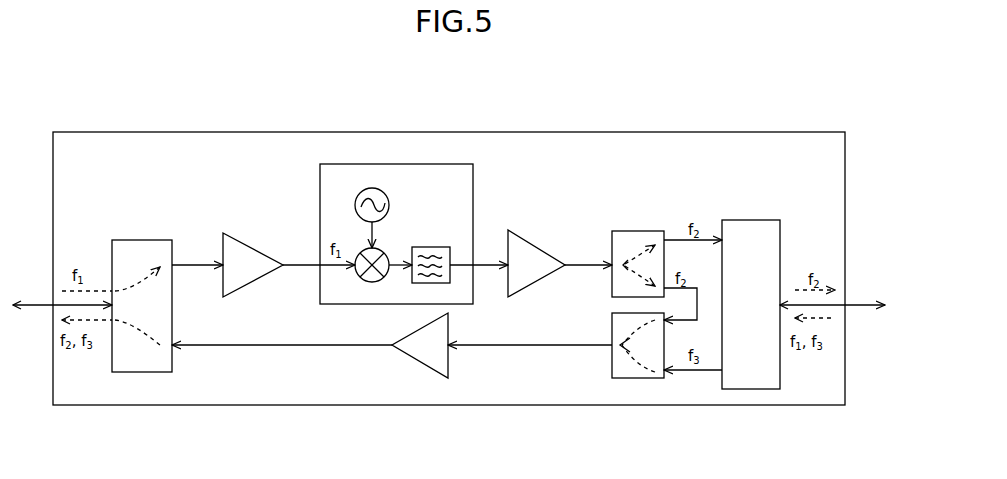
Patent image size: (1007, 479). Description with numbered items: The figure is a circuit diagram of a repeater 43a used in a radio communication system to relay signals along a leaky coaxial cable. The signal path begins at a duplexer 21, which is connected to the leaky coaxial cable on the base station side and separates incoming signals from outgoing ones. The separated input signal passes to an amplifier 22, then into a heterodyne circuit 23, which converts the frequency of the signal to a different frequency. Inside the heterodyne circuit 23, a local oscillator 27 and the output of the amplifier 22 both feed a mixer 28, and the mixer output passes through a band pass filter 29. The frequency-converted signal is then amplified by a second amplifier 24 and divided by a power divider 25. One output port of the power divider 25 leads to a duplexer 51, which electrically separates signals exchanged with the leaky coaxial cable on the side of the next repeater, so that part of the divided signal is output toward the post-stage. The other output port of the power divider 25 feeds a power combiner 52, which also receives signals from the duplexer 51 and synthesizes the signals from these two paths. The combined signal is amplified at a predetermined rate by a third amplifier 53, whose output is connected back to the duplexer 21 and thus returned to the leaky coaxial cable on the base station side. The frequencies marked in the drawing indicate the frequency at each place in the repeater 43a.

The first repeater 43a is at (110, 118).
The duplexer 21 is at (140, 248).
The amplifier 22 is at (255, 256).
The heterodyne circuit 23 is at (477, 168).
The amplifier 24 is at (537, 256).
The power divider 25 is at (637, 238).
The local oscillator 27 is at (375, 190).
The mixer 28 is at (372, 285).
The band pass filter 29 is at (422, 250).
The duplexer 51 is at (752, 228).
The power combiner 52 is at (640, 378).
The amplifier 53 is at (423, 358).